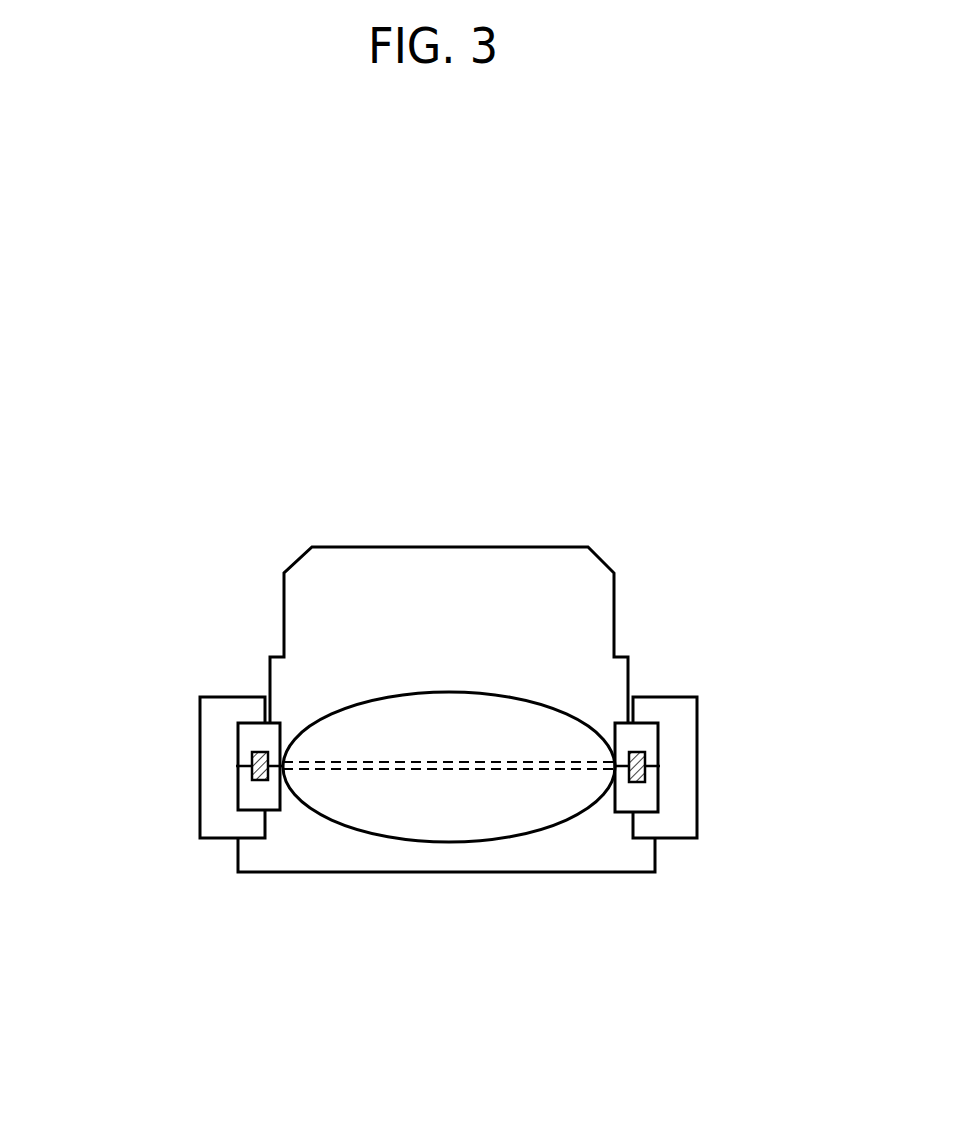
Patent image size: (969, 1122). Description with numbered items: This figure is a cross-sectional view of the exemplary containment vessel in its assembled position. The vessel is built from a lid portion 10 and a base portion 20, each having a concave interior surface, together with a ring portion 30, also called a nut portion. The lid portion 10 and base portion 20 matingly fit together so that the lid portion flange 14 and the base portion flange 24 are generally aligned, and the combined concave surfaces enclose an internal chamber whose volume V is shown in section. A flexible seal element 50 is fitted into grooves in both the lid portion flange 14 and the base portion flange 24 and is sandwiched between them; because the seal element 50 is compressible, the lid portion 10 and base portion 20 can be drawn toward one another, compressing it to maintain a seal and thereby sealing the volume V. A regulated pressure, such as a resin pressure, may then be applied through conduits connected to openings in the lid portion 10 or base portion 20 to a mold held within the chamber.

The lid portion 10 is at (560, 578).
The base portion 20 is at (560, 862).
The ring portion 30 is at (212, 740).
The base portion flange 24 is at (643, 795).
The lid portion flange 14 is at (643, 742).
The flexible seal element 50 is at (658, 767).
The volume of the internal chamber V is at (348, 725).